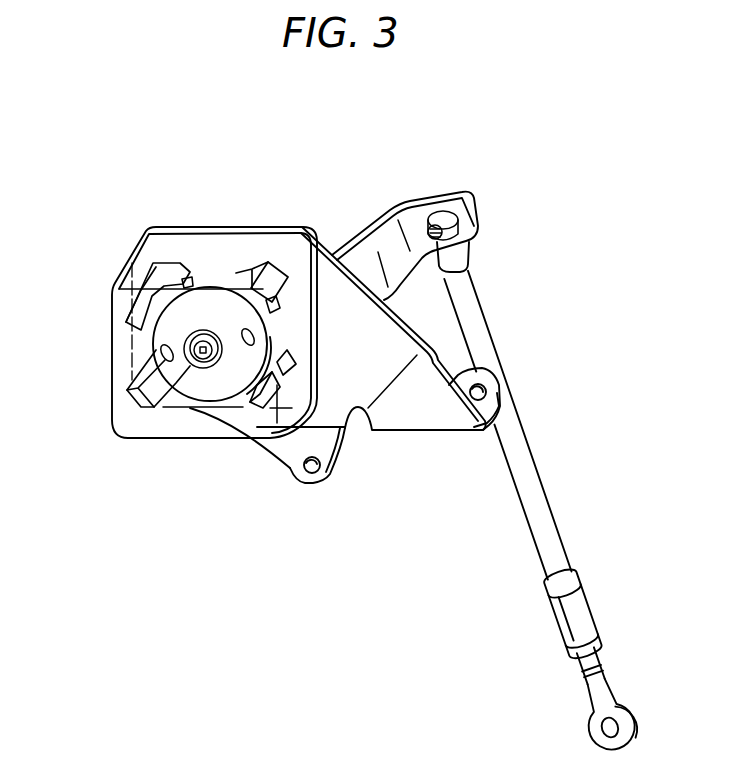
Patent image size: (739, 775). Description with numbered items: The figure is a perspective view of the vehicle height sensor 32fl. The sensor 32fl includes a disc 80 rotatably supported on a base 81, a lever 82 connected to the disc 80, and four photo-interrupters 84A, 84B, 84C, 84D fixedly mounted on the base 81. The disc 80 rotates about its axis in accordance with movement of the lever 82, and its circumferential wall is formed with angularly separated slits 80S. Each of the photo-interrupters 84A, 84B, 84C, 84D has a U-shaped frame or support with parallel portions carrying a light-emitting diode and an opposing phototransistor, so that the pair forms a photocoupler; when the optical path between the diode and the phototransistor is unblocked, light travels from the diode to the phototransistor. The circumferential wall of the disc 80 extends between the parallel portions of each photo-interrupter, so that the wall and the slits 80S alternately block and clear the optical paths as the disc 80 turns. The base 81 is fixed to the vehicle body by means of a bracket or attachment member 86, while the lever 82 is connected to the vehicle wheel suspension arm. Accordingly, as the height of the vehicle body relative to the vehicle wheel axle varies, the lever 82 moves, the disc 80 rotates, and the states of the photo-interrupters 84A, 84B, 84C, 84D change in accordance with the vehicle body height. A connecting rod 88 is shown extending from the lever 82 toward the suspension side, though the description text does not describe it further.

The vehicle height sensor 32fl is at (112, 228).
The disc 80 is at (187, 380).
The slits 80S is at (186, 279).
The base 81 is at (166, 227).
The lever 82 is at (357, 258).
The photo-interrupter 84A is at (257, 264).
The photo-interrupter 84B is at (138, 313).
The photo-interrupter 84C is at (142, 398).
The photo-interrupter 84D is at (257, 403).
The bracket 86 is at (395, 415).
The connecting rod 88 is at (518, 457).